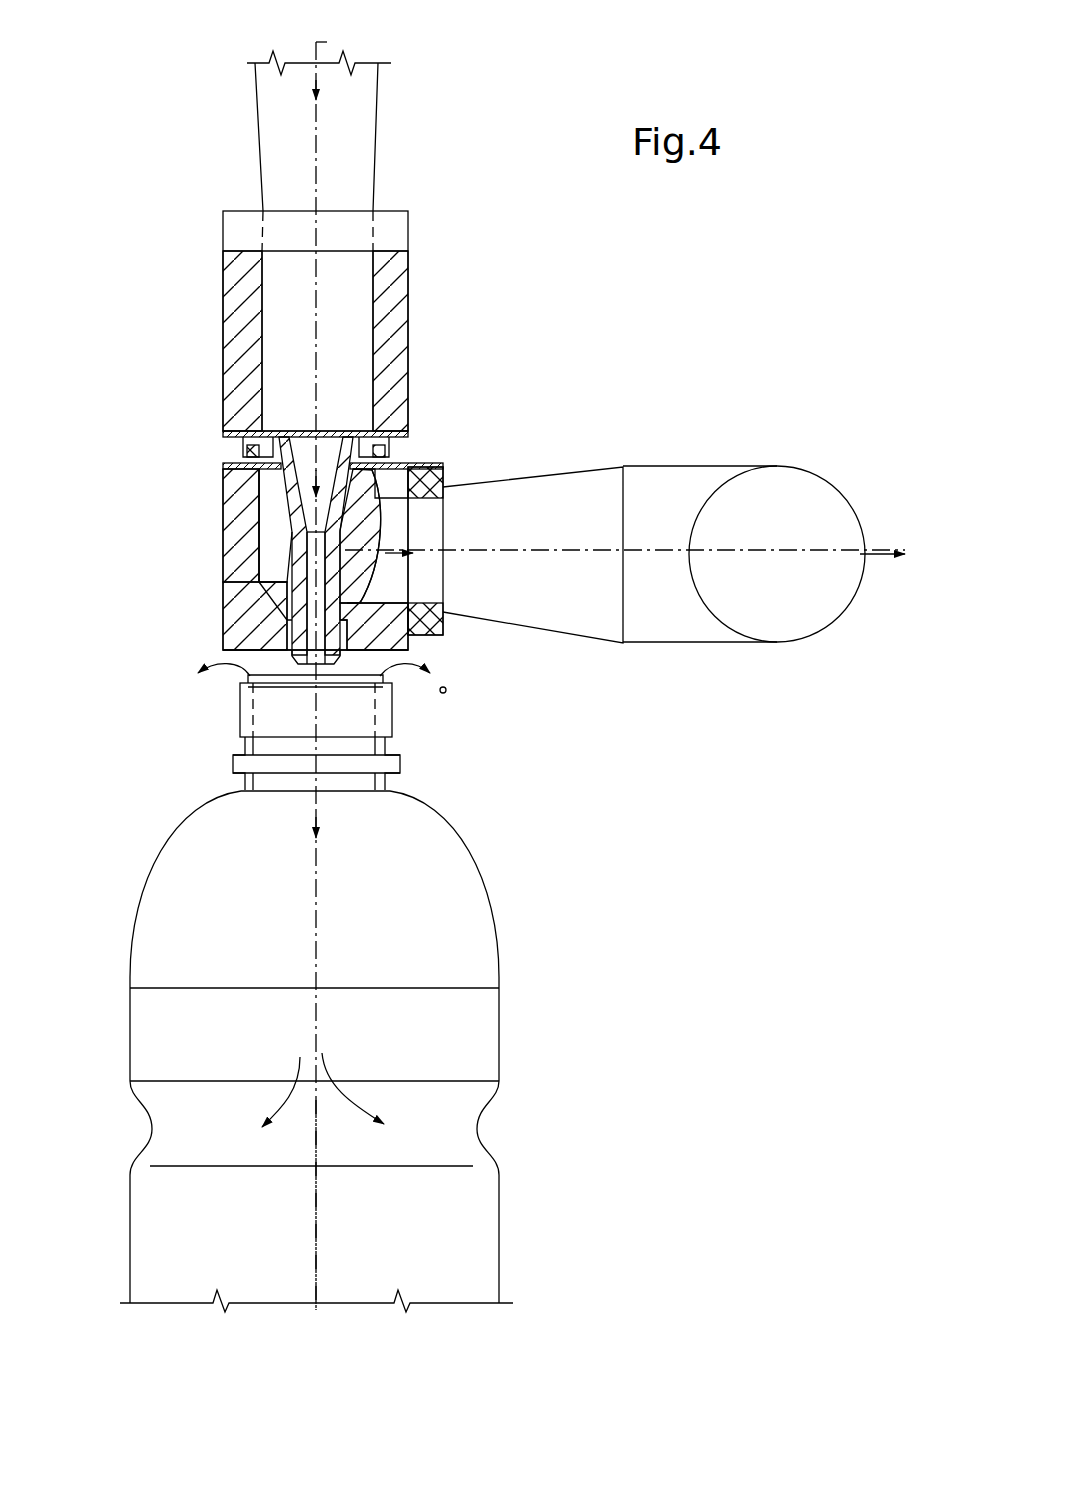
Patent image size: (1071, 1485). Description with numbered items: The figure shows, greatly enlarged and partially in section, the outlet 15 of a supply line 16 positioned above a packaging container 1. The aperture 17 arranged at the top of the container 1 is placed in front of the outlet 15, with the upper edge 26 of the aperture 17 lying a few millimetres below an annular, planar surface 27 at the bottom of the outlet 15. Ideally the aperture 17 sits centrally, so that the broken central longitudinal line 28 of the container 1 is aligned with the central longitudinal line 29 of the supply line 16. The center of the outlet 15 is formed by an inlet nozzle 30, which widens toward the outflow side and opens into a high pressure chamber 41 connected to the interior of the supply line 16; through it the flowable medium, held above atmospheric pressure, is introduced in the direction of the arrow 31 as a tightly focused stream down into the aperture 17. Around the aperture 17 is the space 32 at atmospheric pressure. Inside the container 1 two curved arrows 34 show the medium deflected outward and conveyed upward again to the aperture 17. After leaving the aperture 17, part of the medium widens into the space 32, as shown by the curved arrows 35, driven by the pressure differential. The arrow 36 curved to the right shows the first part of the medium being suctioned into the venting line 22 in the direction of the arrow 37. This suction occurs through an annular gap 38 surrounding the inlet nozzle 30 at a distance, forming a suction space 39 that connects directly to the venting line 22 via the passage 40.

The packaging container 1 is at (509, 953).
The outlet 15 is at (192, 653).
The supply line 16 is at (352, 108).
The aperture 17 is at (272, 713).
The venting line 22 is at (588, 490).
The upper edge 26 is at (385, 678).
The annular planar surface 27 is at (408, 650).
The central longitudinal line 28 is at (316, 1225).
The central longitudinal line 29 is at (317, 333).
The inlet nozzle 30 is at (310, 602).
The arrow 31 is at (318, 42).
The space 32 is at (446, 690).
The curved arrows 34 is at (291, 1105).
The curved arrows 35 is at (243, 665).
The arrow 36 is at (366, 565).
The arrow 37 is at (845, 556).
The annular gap 38 is at (292, 630).
The suction space 39 is at (275, 508).
The passage 40 is at (392, 515).
The high pressure chamber 41 is at (345, 290).